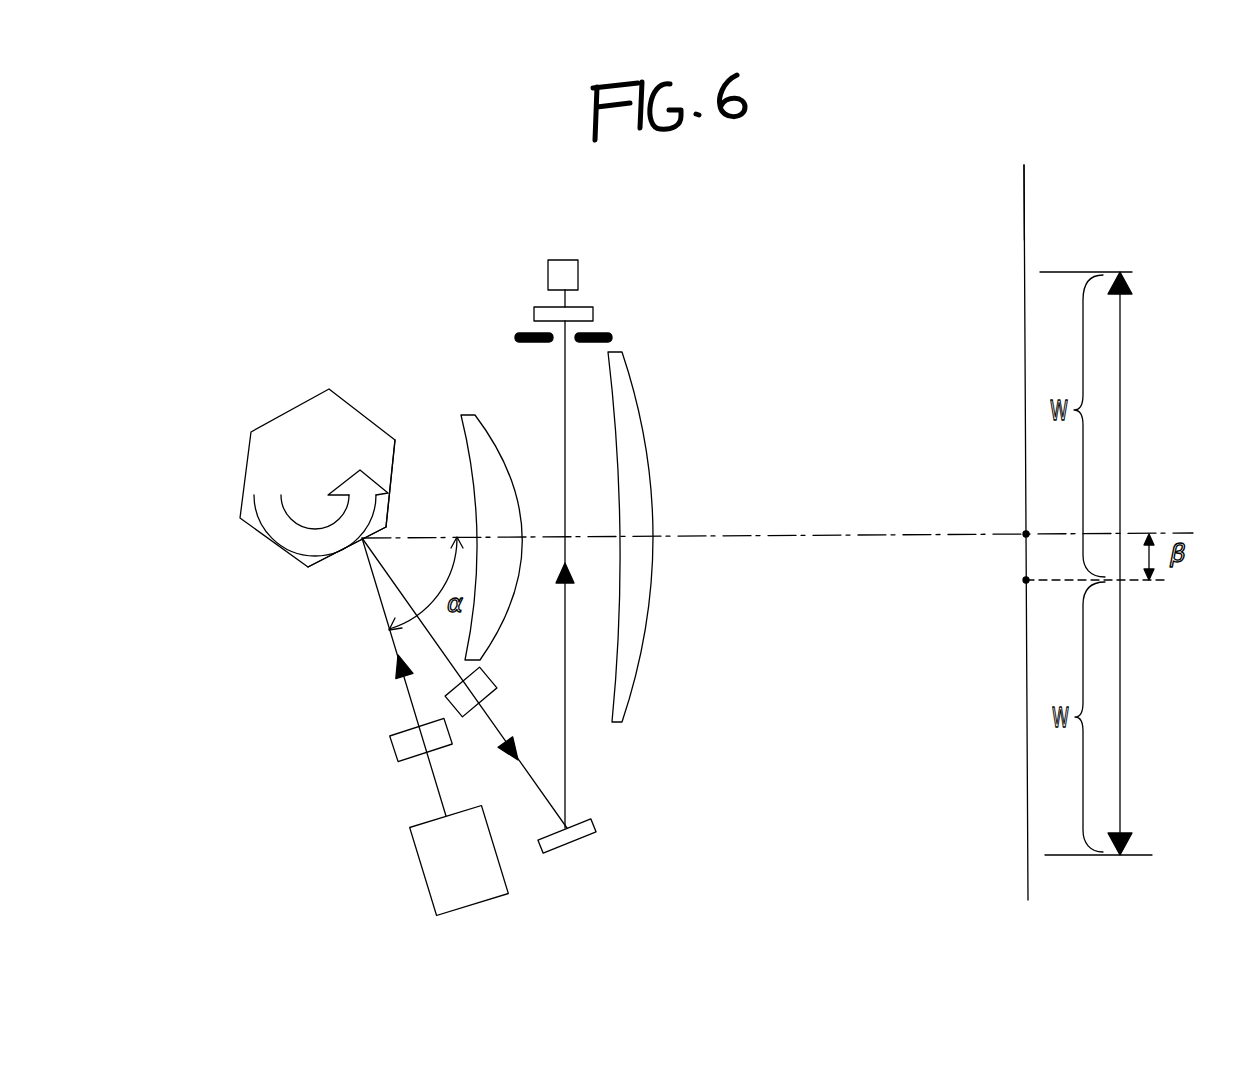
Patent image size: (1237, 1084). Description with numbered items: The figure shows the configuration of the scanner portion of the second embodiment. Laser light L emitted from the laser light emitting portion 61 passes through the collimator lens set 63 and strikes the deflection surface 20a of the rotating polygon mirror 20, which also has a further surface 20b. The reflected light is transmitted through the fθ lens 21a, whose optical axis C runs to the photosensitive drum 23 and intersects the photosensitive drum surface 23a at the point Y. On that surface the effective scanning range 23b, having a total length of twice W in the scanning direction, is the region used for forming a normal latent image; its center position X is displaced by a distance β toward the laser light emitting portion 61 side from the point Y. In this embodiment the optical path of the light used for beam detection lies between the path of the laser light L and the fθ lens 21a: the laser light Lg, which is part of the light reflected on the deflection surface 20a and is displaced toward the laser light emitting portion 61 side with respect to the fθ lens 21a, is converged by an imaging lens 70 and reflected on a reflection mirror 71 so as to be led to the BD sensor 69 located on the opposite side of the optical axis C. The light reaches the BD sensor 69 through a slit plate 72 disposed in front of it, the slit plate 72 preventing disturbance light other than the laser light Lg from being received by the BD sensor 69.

The polygon mirror 20 is at (250, 445).
The deflection surface 20a is at (331, 572).
The reflecting surface of polygon mirror 20b is at (395, 463).
The fθ lens 21a is at (612, 349).
The photosensitive drum 23 is at (1057, 878).
The photosensitive drum surface 23a is at (1022, 208).
The effective scanning range 23b is at (1120, 357).
The laser light emitting portion 61 is at (418, 863).
The collimator lens set 63 is at (392, 748).
The BD sensor 69 is at (578, 265).
The imaging lens 70 is at (492, 677).
The reflection mirror 71 is at (597, 830).
The slit plate 72 is at (593, 312).
The laser light L is at (428, 788).
The laser light Lg is at (493, 722).
The optical axis C is at (807, 535).
The center position X is at (1025, 580).
The point of intersection Y is at (1025, 533).